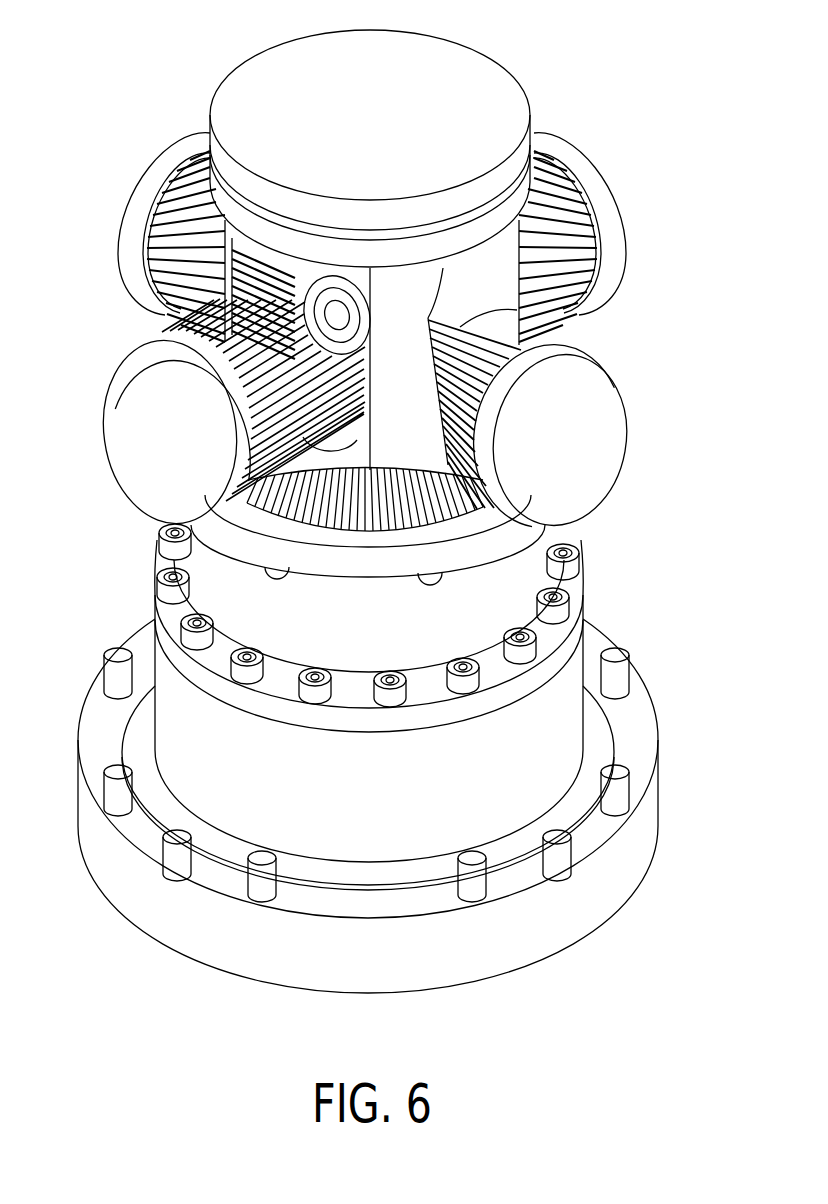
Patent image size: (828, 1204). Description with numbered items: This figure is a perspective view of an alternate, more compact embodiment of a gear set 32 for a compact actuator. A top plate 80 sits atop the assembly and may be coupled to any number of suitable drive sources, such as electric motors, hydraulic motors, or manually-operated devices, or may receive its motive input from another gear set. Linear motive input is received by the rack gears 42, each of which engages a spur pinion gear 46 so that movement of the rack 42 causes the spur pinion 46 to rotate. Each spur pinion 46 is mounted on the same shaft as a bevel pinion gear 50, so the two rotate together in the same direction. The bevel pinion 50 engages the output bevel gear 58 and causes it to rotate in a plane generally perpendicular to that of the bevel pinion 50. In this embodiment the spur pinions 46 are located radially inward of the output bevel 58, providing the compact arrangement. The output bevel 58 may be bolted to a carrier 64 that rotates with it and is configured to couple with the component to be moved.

The gear set 32 is at (620, 88).
The top plate 80 is at (508, 78).
The rack gear 42 is at (237, 328).
The spur pinion gear 46 is at (520, 310).
The bevel pinion gear 50 is at (575, 450).
The output bevel gear 58 is at (482, 522).
The carrier 64 is at (517, 573).